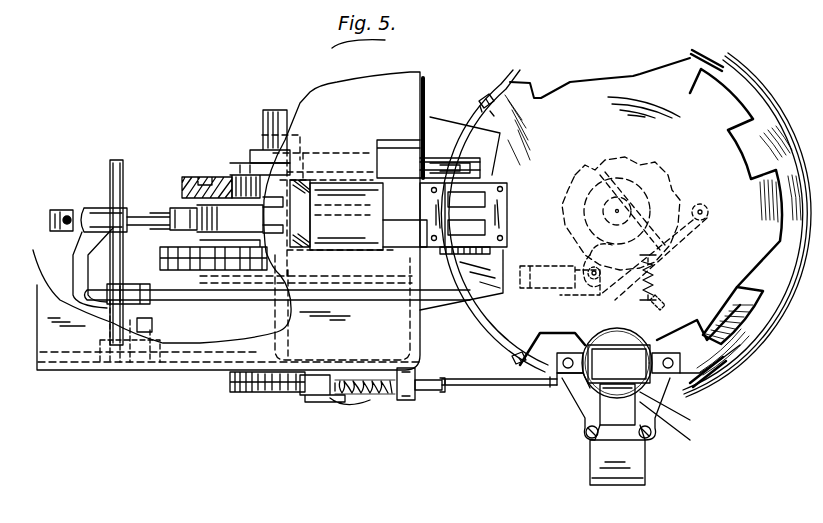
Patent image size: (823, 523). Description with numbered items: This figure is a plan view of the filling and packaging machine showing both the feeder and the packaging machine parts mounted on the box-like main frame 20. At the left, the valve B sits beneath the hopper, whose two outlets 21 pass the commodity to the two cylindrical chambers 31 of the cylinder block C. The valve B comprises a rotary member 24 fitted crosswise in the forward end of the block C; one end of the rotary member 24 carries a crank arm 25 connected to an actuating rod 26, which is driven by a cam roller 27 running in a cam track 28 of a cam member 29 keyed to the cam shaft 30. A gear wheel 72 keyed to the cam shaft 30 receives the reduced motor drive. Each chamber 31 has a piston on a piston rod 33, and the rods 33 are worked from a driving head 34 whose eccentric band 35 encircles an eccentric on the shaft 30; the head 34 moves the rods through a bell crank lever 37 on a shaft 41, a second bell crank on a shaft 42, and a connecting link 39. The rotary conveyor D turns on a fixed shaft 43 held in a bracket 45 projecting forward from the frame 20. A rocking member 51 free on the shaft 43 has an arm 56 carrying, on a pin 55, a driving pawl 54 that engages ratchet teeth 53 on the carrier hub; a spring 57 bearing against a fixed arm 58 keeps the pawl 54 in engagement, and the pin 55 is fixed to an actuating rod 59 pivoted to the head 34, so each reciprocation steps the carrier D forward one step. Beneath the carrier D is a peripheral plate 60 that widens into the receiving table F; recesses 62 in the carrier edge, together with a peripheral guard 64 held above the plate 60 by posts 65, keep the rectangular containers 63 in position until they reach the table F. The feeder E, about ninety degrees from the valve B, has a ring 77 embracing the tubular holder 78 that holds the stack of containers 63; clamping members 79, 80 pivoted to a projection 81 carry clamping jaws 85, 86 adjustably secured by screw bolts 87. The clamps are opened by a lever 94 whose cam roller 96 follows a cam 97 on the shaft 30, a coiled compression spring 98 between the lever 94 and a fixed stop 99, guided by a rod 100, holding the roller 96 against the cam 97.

The main frame 20 is at (68, 372).
The outlets 21 is at (485, 218).
The rotary member 24 is at (492, 252).
The crank arm 25 is at (442, 160).
The actuating rod 26 is at (382, 150).
The cam roller 27 is at (305, 172).
The cam track 28 is at (244, 172).
The cam member 29 is at (185, 185).
The cam shaft 30 is at (272, 112).
The cylindrical chambers 31 is at (308, 210).
The piston rod 33 is at (280, 210).
The driving head 34 is at (80, 236).
The eccentric band 35 is at (190, 232).
The bell crank lever 37 is at (50, 225).
The link 39 is at (69, 216).
The shaft 41 is at (120, 160).
The shaft 42 is at (154, 318).
The fixed shaft 43 is at (630, 190).
The bracket 45 is at (470, 300).
The rocking member 51 is at (650, 175).
The ratchet teeth 53 is at (700, 203).
The driving pawl 54 is at (655, 258).
The pin 55 is at (560, 290).
The arm 56 is at (588, 270).
The spring 57 is at (660, 278).
The fixed arm 58 is at (660, 303).
The actuating rod 59 is at (505, 295).
The peripheral plate 60 is at (575, 80).
The recesses 62 is at (750, 122).
The containers 63 is at (690, 442).
The peripheral guard 64 is at (505, 90).
The posts 65 is at (484, 96).
The gear wheel 72 is at (162, 260).
The ring 77 is at (627, 345).
The tubular holder 78 is at (600, 345).
The clamping member 79 is at (585, 392).
The clamping member 80 is at (696, 418).
The projection 81 is at (618, 486).
The clamping jaw 85 is at (572, 352).
The clamping jaw 86 is at (665, 352).
The screw bolts 87 is at (560, 380).
The lever 94 is at (480, 386).
The cam roller 96 is at (312, 396).
The cam 97 is at (238, 392).
The coiled compression spring 98 is at (382, 396).
The fixed stop 99 is at (404, 402).
The rod 100 is at (428, 392).
The valve B is at (500, 185).
The cylinder block C is at (345, 185).
The rotary conveyor D is at (636, 80).
The feeder E is at (565, 400).
The receiving table F is at (746, 72).